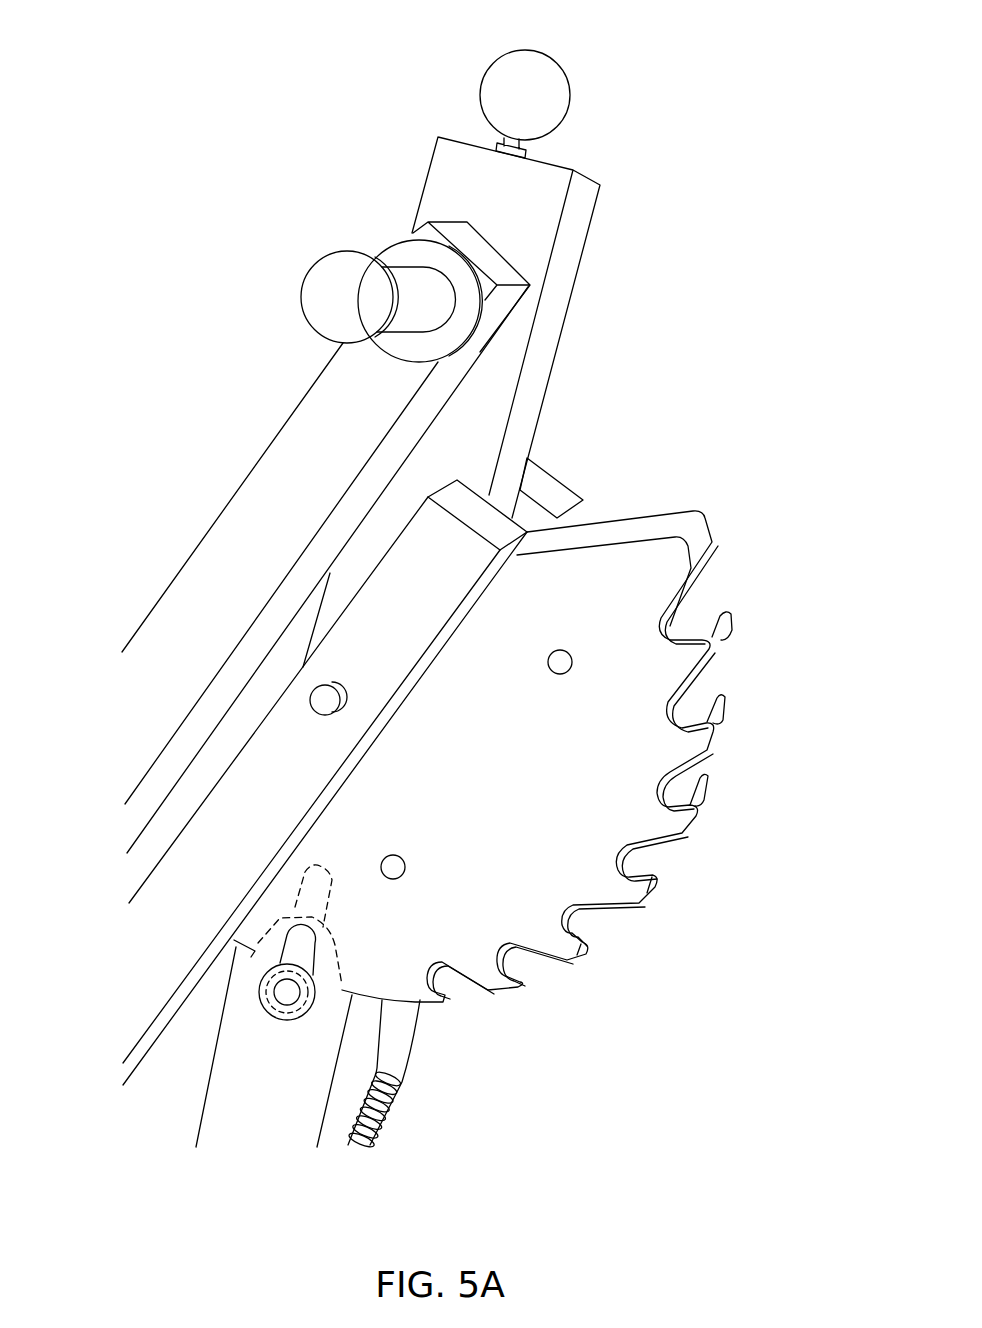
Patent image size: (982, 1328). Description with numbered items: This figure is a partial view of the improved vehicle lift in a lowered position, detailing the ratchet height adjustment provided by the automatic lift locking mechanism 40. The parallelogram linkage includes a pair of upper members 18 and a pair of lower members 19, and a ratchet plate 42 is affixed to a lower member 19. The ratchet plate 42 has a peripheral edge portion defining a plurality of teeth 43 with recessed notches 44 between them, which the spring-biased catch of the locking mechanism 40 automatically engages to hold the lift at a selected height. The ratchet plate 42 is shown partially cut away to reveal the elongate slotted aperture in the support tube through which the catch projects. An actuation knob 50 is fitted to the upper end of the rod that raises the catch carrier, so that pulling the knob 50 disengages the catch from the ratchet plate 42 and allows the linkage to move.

The upper member 18 is at (277, 493).
The lower member 19 is at (153, 957).
The automatic lift locking mechanism 40 is at (758, 498).
The ratchet plate 42 is at (482, 790).
The teeth 43 is at (717, 727).
The recessed notches 44 is at (708, 593).
The actuation knob 50 is at (555, 88).